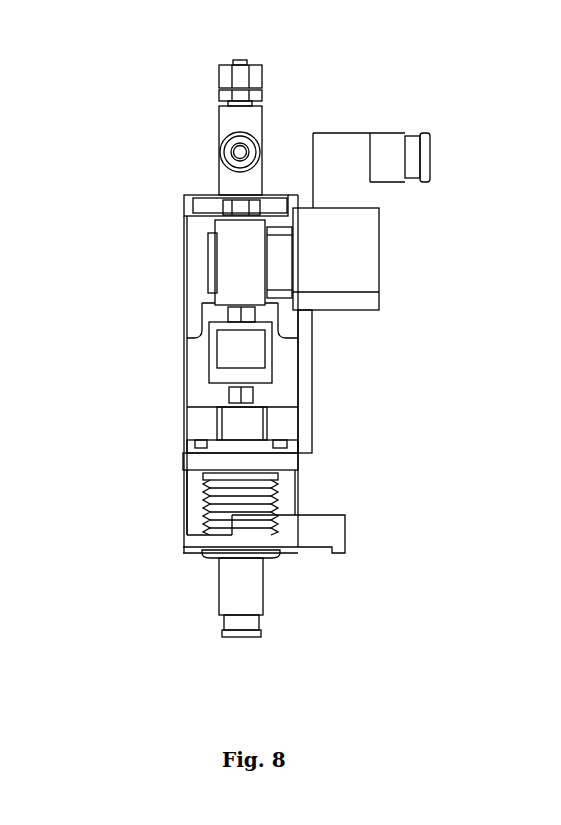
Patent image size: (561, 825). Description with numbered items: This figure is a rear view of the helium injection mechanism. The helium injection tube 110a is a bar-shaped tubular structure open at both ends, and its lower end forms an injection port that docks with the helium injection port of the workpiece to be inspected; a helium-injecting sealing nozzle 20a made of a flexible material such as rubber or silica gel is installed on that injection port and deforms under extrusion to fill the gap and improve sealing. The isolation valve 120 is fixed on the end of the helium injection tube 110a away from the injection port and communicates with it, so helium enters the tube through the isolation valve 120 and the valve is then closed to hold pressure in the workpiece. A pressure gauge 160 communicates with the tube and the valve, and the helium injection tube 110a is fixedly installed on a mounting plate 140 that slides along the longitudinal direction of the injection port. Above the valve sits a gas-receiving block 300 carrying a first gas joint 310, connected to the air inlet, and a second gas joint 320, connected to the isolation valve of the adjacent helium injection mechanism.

The gas-receiving block 300 is at (223, 130).
The first gas joint 310 is at (243, 80).
The second gas joint 320 is at (225, 150).
The isolation valve 120 is at (343, 265).
The pressure gauge 160 is at (225, 333).
The mounting plate 140 is at (205, 430).
The helium injection tube 110a is at (247, 595).
The helium-injecting sealing nozzle 20a is at (247, 629).